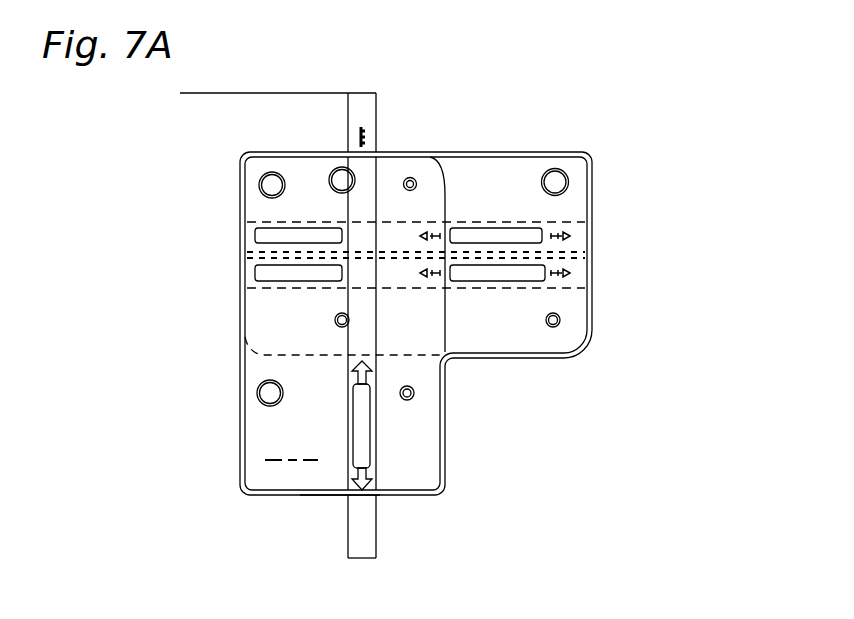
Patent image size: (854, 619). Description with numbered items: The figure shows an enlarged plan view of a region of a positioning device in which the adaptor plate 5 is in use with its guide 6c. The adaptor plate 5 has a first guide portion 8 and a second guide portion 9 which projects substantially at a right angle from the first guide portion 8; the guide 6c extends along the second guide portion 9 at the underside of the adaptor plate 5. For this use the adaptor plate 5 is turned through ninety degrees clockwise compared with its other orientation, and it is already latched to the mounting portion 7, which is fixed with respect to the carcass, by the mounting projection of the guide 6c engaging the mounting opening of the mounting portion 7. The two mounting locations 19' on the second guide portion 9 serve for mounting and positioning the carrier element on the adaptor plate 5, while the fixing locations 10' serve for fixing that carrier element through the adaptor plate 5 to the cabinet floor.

The adaptor plate 5 is at (607, 200).
The mounting portion 7 is at (360, 525).
The first guide portion 8 is at (550, 300).
The second guide portion 9 is at (407, 450).
The guide 6c is at (338, 497).
The mounting locations 19' is at (191, 275).
The fixing locations 10' is at (484, 237).